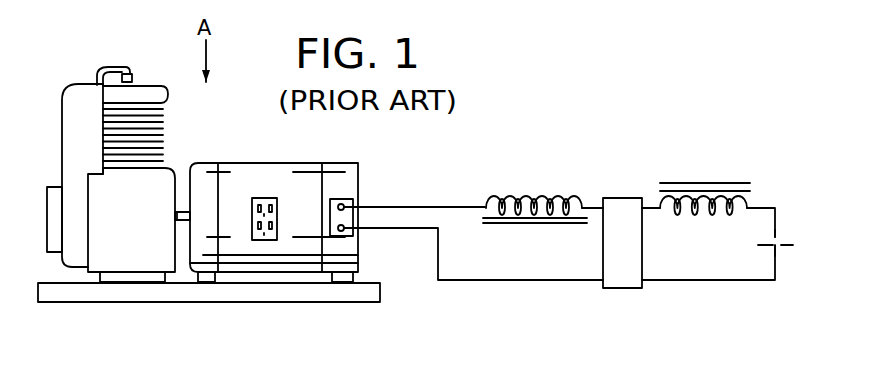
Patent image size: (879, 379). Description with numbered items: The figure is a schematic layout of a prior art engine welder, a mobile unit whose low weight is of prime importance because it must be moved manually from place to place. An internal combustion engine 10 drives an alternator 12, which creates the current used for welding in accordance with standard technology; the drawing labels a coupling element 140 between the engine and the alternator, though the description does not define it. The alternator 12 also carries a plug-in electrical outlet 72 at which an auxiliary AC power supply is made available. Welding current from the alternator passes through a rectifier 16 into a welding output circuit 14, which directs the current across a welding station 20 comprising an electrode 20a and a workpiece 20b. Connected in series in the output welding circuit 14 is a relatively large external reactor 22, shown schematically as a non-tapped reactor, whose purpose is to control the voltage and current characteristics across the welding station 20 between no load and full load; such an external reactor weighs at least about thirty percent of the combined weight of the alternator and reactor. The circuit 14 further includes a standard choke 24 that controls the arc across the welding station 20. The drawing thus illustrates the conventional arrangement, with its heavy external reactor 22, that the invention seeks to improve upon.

The internal combustion engine 10 is at (81, 164).
The alternator 12 is at (265, 282).
The welding output circuit 14 is at (710, 292).
The rectifier 16 is at (635, 279).
The welding station 20 is at (786, 238).
The electrode 20a is at (778, 230).
The workpiece 20b is at (782, 248).
The reactor 22 is at (545, 195).
The choke 24 is at (724, 181).
The electrical outlet 72 is at (258, 198).
The drive shaft 140 is at (177, 216).